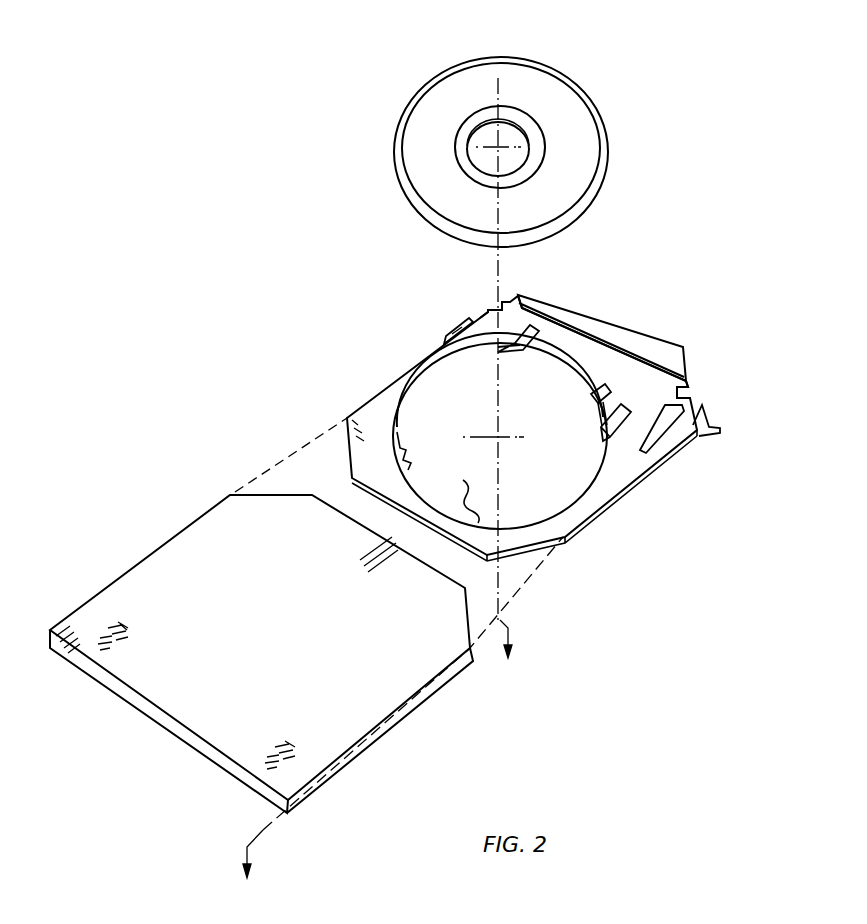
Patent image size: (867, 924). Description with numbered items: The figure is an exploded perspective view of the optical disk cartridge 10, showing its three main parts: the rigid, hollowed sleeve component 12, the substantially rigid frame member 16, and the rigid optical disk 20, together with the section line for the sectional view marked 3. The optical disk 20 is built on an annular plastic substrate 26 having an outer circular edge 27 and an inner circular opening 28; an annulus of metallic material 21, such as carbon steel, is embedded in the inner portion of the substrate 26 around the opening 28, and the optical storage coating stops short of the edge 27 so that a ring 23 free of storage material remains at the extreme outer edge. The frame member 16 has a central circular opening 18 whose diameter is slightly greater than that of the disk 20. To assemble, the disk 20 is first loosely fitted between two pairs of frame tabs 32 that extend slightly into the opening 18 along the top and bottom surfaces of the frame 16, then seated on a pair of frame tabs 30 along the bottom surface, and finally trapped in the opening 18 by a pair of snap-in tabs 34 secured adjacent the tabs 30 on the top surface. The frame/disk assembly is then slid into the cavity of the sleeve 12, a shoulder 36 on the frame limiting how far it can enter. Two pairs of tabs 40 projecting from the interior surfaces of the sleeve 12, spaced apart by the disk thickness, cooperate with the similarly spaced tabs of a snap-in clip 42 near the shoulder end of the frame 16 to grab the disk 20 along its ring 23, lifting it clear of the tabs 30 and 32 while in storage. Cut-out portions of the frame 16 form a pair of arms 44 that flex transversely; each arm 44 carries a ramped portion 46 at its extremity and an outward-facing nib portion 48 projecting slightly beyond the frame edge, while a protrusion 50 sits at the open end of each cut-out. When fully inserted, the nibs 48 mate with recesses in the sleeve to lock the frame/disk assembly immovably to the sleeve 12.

The optical disk cartridge 10 is at (591, 542).
The sleeve component 12 is at (411, 667).
The frame member 16 is at (632, 479).
The central circular opening 18 is at (598, 410).
The optical disk 20 is at (503, 131).
The annulus of metallic material 21 is at (540, 126).
The ring free of storage material 23 is at (509, 62).
The annular plastic substrate 26 is at (580, 136).
The outer circular edge 27 is at (560, 72).
The inner circular opening 28 is at (458, 137).
The frame tabs 30 is at (590, 393).
The frame tabs 32 is at (410, 466).
The snap-in tabs 34 is at (531, 328).
The shoulder 36 is at (604, 318).
The tabs 40 is at (130, 644).
The snap-in clip 42 is at (601, 437).
The arms 44 is at (463, 321).
The ramped portion 46 is at (477, 312).
The nib portion 48 is at (721, 430).
The protrusions 50 is at (488, 313).
The section line 3- 3 is at (401, 720).